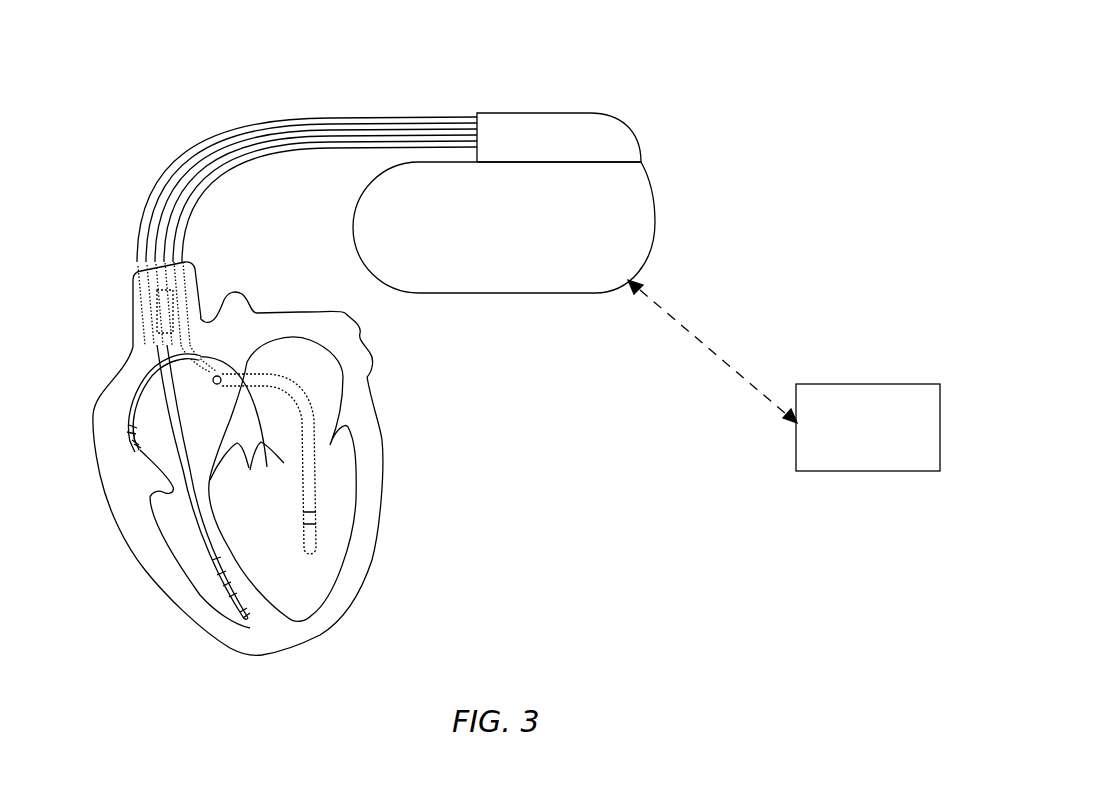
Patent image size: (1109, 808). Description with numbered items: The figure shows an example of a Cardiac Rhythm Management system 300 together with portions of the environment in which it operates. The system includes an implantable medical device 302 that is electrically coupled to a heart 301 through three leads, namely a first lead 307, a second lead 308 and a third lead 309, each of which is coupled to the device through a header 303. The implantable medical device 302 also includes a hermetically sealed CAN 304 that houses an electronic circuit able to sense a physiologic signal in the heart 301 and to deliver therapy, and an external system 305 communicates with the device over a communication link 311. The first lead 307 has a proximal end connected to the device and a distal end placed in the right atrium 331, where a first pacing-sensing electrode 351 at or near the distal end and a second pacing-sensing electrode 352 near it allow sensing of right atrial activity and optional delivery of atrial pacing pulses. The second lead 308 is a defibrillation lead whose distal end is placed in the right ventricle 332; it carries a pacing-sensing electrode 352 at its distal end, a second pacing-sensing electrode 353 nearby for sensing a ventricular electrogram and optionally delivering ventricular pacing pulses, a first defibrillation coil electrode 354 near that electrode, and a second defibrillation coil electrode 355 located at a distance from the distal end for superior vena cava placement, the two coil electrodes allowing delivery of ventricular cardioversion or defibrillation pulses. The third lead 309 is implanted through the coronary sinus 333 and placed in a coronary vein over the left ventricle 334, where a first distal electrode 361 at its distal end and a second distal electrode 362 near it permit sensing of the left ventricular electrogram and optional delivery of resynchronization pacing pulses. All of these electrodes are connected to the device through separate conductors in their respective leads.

The Cardiac Rhythm Management system 300 is at (812, 44).
The heart 301 is at (380, 507).
The implantable medical device 302 is at (614, 106).
The header 303 is at (641, 152).
The hermetically sealed CAN 304 is at (656, 232).
The external system 305 is at (896, 384).
The first lead 307 is at (210, 134).
The second lead 308 is at (303, 134).
The third lead 309 is at (380, 143).
The communication link 311 is at (684, 323).
The right atrium 331 is at (147, 398).
The right ventricle 332 is at (173, 511).
The coronary sinus 333 is at (219, 376).
The left ventricle 334 is at (305, 600).
The first pacing-sensing electrode 351 is at (135, 451).
The second pacing-sensing electrode 352 is at (145, 427).
The second pacing-sensing electrode 353 is at (230, 590).
The first defibrillation coil electrode 354 is at (215, 563).
The second defibrillation coil electrode 355 is at (170, 317).
The first distal electrode 361 is at (312, 552).
The second distal electrode 362 is at (314, 524).